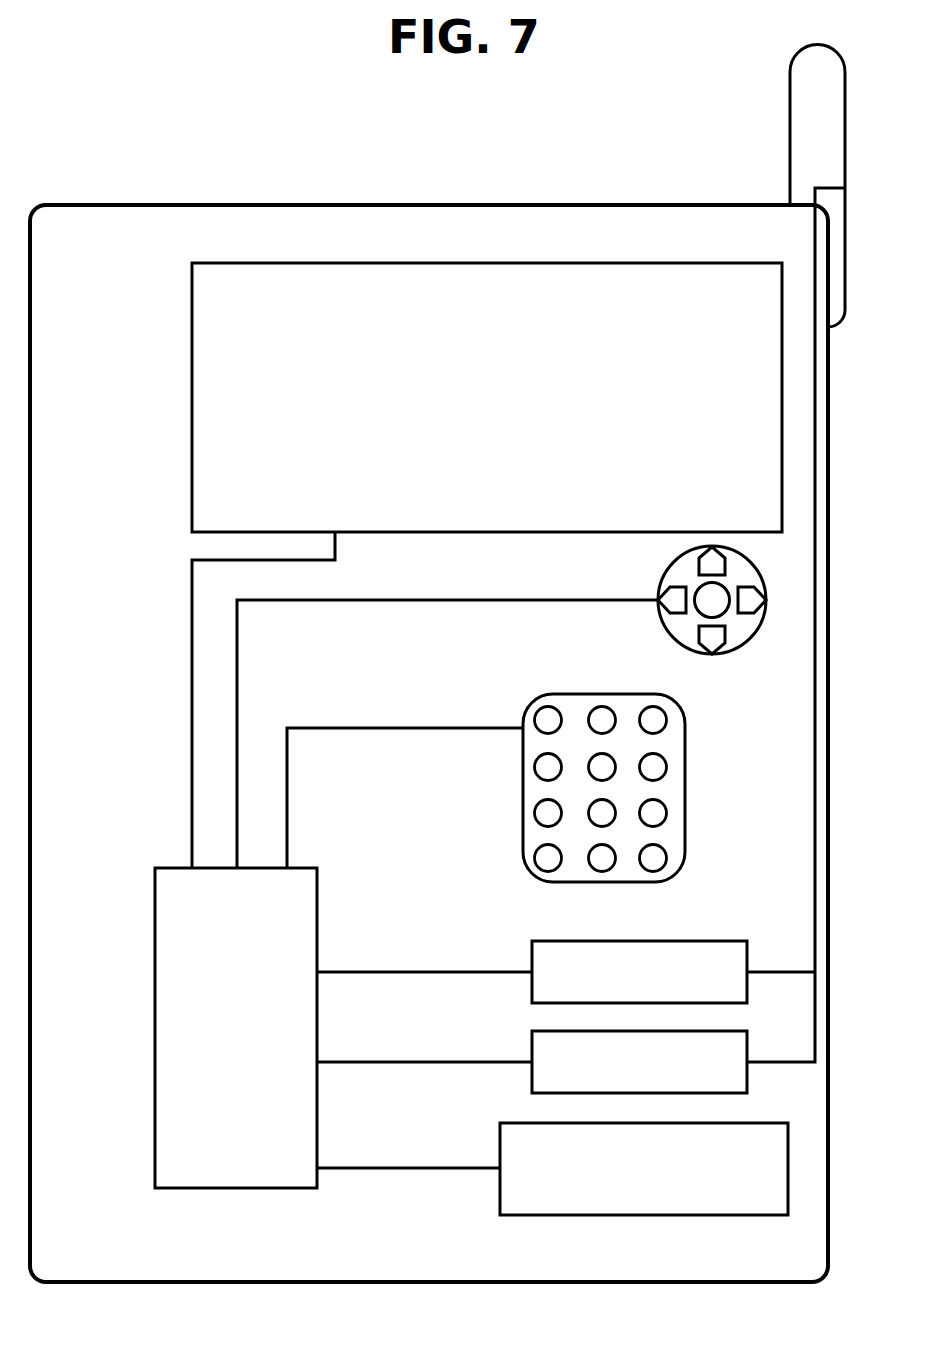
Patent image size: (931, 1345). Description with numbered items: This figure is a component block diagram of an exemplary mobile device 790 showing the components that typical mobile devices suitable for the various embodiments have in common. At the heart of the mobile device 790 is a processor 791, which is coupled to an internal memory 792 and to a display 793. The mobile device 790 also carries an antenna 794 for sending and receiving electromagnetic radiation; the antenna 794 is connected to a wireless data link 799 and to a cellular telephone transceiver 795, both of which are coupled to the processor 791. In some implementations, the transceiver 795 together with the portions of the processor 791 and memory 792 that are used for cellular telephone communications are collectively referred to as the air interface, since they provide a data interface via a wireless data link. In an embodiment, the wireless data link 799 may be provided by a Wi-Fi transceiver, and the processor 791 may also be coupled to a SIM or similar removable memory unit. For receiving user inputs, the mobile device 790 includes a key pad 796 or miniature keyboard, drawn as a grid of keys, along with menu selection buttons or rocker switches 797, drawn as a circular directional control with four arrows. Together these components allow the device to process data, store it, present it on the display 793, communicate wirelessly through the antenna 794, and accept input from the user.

The mobile device 790 is at (440, 210).
The processor 791 is at (225, 1039).
The internal memory 792 is at (624, 1178).
The display 793 is at (448, 398).
The antenna 794 is at (790, 80).
The cellular telephone transceiver 795 is at (619, 1072).
The key pad 796 is at (685, 783).
The menu selection buttons or rocker switches 797 is at (712, 654).
The wireless data link 799 is at (619, 982).